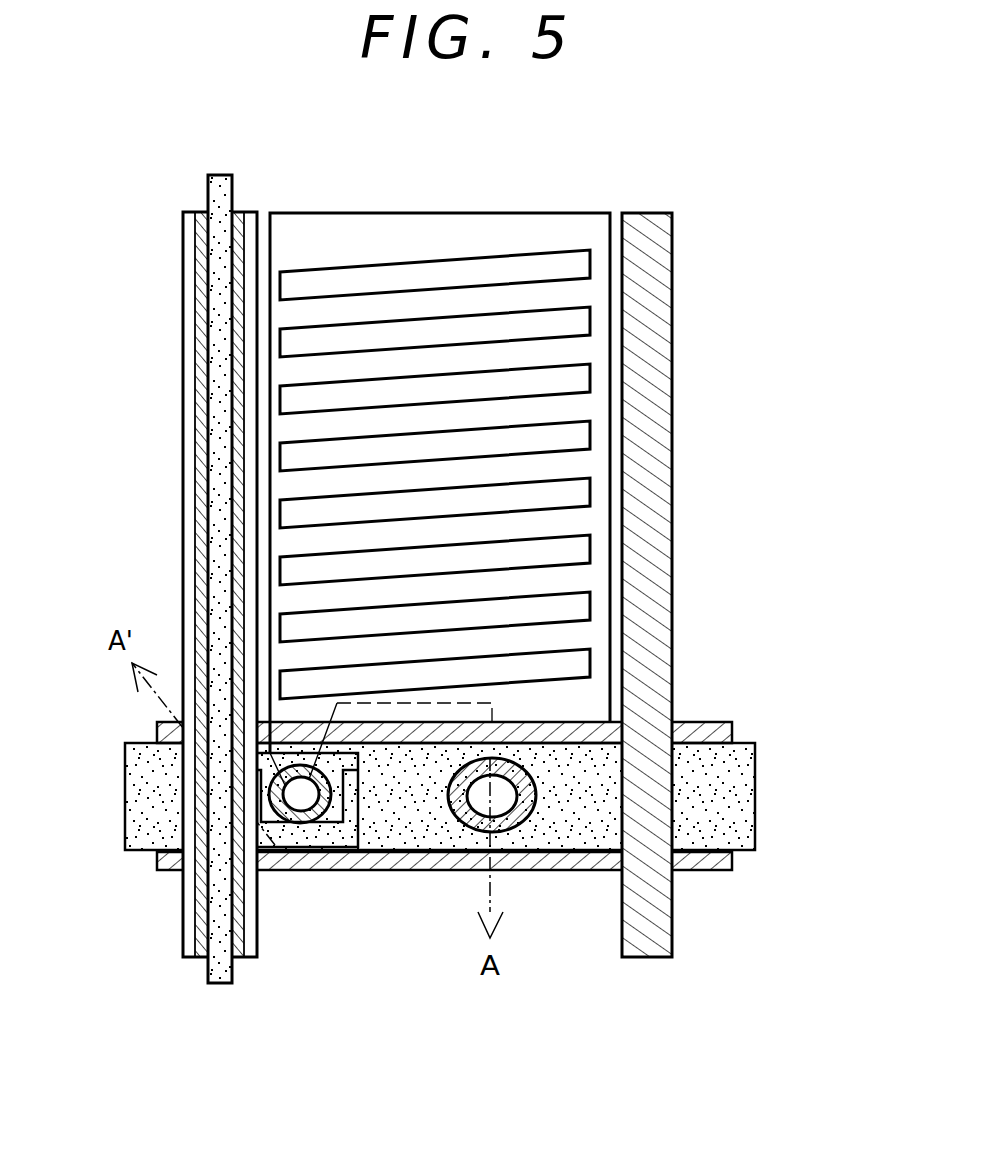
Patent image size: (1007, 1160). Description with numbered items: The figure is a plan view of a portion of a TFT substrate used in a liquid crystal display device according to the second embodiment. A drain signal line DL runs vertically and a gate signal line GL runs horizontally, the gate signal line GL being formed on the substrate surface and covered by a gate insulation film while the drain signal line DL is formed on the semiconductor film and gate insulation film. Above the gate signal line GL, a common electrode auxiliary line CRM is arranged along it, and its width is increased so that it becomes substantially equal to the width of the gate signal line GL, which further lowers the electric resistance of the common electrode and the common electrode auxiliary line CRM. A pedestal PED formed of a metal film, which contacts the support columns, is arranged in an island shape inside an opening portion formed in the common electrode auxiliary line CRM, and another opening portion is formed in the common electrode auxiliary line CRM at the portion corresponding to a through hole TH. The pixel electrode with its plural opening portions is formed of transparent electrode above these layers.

The drain signal line DL is at (197, 475).
The gate signal line GL is at (703, 722).
The common electrode auxiliary line CRM is at (732, 828).
The through hole TH is at (302, 800).
The pedestal PED is at (505, 807).